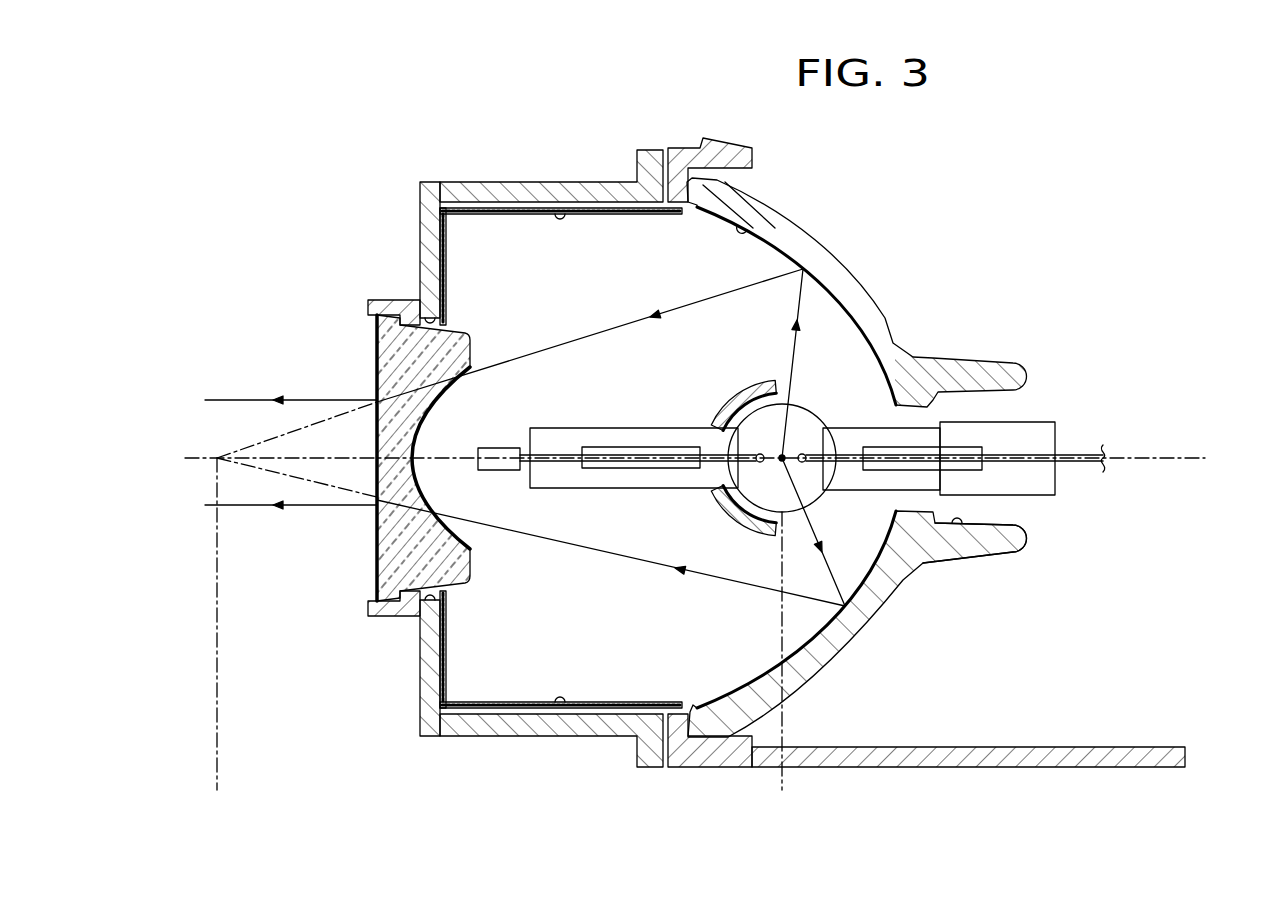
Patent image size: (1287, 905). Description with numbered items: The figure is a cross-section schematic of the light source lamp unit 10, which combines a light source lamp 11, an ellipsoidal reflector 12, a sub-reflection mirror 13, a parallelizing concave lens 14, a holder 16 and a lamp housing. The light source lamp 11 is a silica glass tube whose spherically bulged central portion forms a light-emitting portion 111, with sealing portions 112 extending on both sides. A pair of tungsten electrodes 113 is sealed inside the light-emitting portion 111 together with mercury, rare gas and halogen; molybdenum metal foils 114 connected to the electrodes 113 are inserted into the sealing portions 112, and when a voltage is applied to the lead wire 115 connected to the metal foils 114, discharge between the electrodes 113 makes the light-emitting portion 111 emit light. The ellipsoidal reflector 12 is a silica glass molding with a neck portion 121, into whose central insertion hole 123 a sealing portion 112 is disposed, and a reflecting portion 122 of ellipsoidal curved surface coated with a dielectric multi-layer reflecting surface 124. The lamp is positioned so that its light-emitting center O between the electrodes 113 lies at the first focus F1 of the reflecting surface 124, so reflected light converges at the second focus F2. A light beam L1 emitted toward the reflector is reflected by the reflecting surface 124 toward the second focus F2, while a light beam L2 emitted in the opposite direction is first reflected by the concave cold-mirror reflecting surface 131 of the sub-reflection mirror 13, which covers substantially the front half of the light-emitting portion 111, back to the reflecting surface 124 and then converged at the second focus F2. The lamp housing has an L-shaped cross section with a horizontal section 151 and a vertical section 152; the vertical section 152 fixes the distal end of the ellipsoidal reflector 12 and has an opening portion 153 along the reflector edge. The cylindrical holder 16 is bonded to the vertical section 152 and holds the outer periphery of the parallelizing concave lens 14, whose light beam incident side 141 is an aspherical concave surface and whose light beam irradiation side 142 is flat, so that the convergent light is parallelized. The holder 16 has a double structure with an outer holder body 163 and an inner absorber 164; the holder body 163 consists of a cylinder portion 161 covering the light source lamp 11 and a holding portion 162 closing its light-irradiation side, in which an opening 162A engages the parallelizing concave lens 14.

The light source lamp unit 10 is at (695, 279).
The light source lamp 11 is at (668, 428).
The light-emitting portion 111 is at (804, 412).
The sealing portion 112 is at (619, 440).
The tungsten electrode 113 is at (760, 462).
The metal foil 114 is at (650, 467).
The lead wire 115 is at (560, 456).
The ellipsoidal reflector 12 is at (853, 257).
The neck portion 121 is at (1008, 544).
The reflecting portion 122 is at (835, 657).
The insertion hole 123 is at (955, 528).
The reflecting surface 124 is at (748, 228).
The sub-reflection mirror 13 is at (720, 407).
The reflecting surface 131 is at (776, 392).
The parallelizing concave lens 14 is at (377, 385).
The light beam incident side 141 is at (430, 422).
The light beam irradiation side 142 is at (377, 540).
The horizontal section 151 is at (1008, 768).
The vertical section 152 is at (695, 768).
The opening portion 153 is at (682, 148).
The holder 16 is at (435, 62).
The cylinder portion 161 is at (497, 182).
The holding portion 162 is at (416, 182).
The opening 162A is at (425, 292).
The holder body 163 is at (389, 99).
The absorber 164 is at (570, 208).
The light beam L1 is at (780, 262).
The light beam L2 is at (840, 585).
The first focus F1 is at (782, 665).
The second focus F2 is at (289, 610).
The light-emitting center O is at (785, 452).